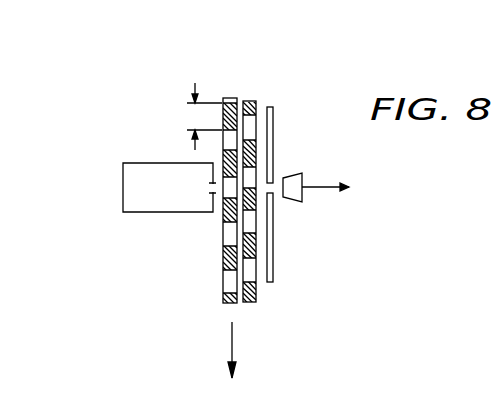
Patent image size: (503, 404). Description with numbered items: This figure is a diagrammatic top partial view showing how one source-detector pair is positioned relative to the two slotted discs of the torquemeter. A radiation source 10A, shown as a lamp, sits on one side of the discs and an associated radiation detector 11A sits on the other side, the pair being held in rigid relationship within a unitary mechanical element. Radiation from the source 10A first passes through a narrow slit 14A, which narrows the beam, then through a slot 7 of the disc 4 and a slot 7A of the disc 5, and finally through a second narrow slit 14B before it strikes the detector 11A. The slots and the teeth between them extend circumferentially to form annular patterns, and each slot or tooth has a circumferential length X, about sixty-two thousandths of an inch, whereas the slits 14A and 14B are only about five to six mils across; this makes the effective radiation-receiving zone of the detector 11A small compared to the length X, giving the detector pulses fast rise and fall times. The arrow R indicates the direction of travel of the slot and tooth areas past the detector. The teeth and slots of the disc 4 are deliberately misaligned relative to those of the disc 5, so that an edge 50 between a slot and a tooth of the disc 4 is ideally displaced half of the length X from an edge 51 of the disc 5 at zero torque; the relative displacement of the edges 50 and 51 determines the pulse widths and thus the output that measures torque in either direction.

The disc 5 is at (229, 98).
The disc 4 is at (251, 101).
The slot 7 is at (248, 128).
The slit 14B is at (270, 189).
The radiation detector 11A is at (294, 193).
The edge 50 is at (249, 218).
The edge 51 is at (230, 228).
The slot 7A is at (228, 241).
The radiation source 10A is at (123, 172).
The slit 14A is at (210, 187).
The arrow indicating direction of travel R is at (232, 335).
The length of slots and teeth X is at (204, 116).